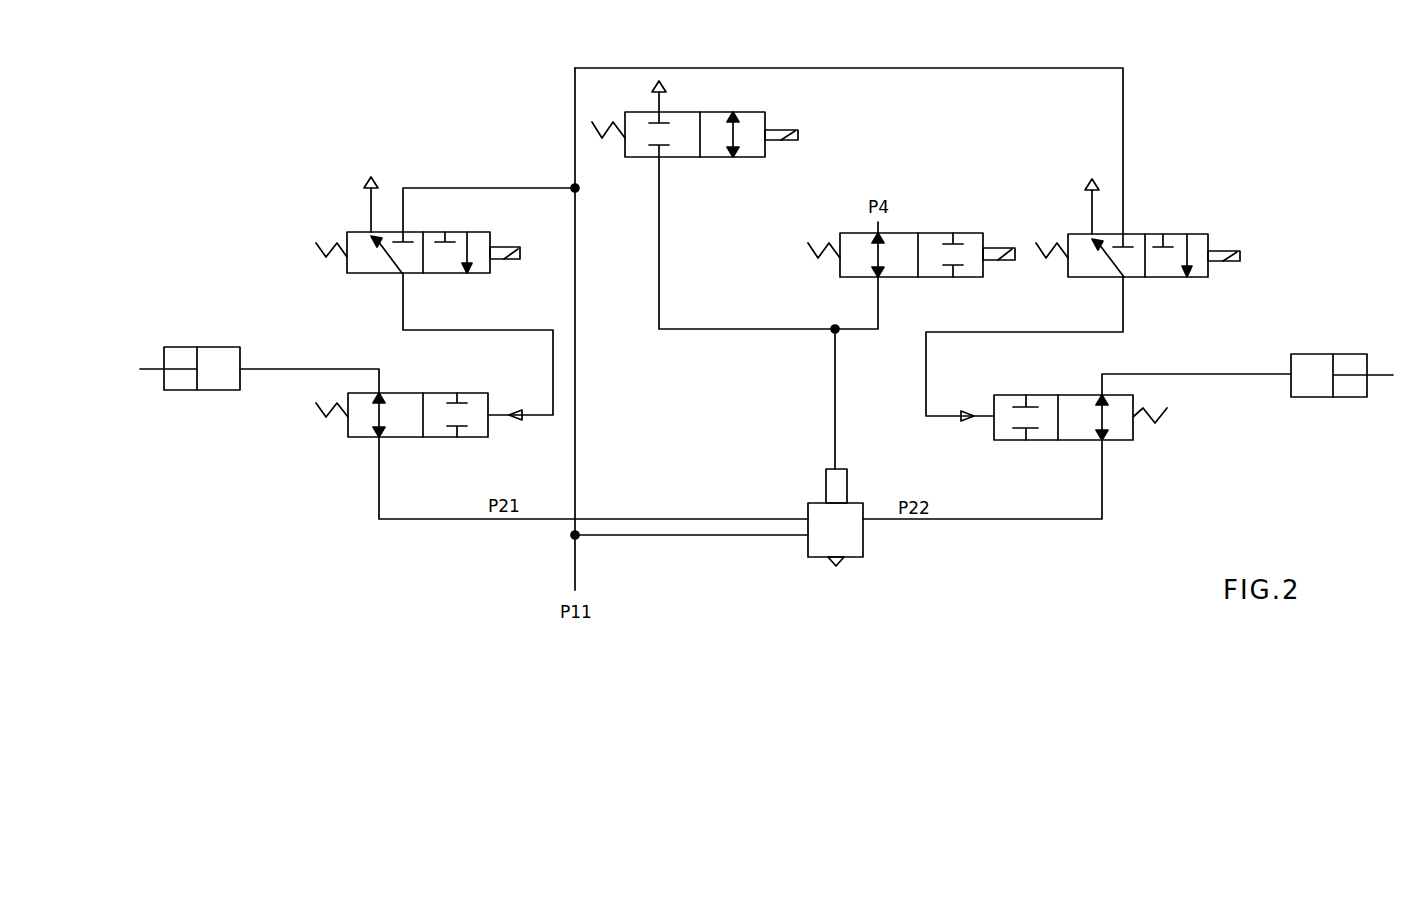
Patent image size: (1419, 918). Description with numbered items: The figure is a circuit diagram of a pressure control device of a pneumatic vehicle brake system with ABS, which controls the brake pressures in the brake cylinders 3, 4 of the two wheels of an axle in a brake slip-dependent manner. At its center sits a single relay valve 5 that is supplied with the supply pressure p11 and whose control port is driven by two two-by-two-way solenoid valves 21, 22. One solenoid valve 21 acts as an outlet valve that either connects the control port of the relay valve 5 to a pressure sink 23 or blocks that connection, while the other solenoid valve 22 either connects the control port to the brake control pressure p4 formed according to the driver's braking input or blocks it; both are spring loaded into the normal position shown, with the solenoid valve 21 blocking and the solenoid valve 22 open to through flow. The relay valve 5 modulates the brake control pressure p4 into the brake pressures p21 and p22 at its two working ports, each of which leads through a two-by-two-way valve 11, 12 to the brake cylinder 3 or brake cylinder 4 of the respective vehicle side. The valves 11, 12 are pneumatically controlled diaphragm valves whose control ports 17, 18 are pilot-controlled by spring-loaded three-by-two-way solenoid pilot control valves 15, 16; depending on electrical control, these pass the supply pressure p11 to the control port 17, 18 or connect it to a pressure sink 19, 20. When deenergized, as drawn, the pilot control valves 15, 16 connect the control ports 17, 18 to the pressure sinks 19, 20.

The brake cylinder 3 is at (1310, 361).
The brake cylinder 4 is at (222, 383).
The relay valve 5 is at (852, 512).
The 2/2-way valve 11 is at (1075, 400).
The 2/2-way valve 12 is at (440, 397).
The 3/2-way solenoid pilot control valve 15 is at (1173, 240).
The 3/2-way solenoid pilot control valve 16 is at (372, 270).
The control port 17 is at (964, 410).
The control port 18 is at (518, 410).
The pressure sink 19 is at (1088, 184).
The pressure sink 20 is at (362, 182).
The 2/2-way solenoid valve 21 is at (760, 116).
The 2/2-way solenoid valve 22 is at (936, 232).
The pressure sink 23 is at (651, 85).